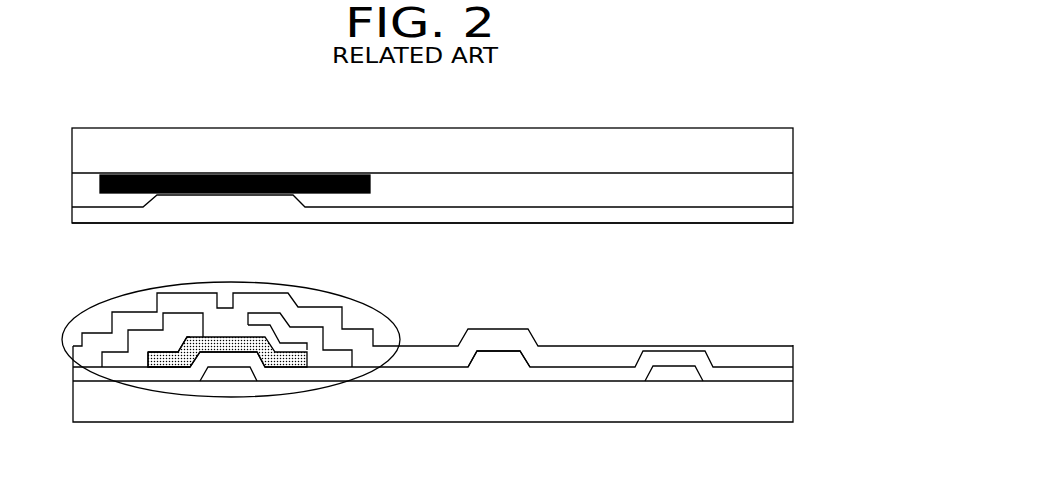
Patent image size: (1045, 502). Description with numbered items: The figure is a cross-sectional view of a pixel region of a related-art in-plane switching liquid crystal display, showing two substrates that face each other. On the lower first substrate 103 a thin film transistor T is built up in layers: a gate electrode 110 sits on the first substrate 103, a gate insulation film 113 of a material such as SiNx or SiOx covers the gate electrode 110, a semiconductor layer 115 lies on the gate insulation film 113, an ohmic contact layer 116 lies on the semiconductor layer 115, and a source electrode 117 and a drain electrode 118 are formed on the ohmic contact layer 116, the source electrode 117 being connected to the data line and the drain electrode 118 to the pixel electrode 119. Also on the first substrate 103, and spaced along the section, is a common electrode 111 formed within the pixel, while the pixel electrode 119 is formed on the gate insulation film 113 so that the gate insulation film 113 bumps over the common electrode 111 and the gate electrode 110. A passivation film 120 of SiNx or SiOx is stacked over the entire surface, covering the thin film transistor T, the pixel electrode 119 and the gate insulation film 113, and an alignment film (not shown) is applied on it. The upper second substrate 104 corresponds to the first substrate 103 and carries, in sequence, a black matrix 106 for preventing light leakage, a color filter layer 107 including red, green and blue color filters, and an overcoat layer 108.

The first substrate 103 is at (793, 400).
The second substrate 104 is at (793, 137).
The black matrix 106 is at (182, 173).
The color filter layer 107 is at (793, 188).
The overcoat layer 108 is at (793, 213).
The gate electrode 110 is at (227, 377).
The common electrode 111 is at (677, 372).
The gate insulation film 113 is at (793, 373).
The semiconductor layer 115 is at (282, 352).
The ohmic contact layer 116 is at (158, 352).
The source electrode 117 is at (190, 322).
The drain electrode 118 is at (262, 318).
The pixel electrode 119 is at (498, 357).
The passivation film 120 is at (793, 348).
The thin film transistor T is at (95, 307).